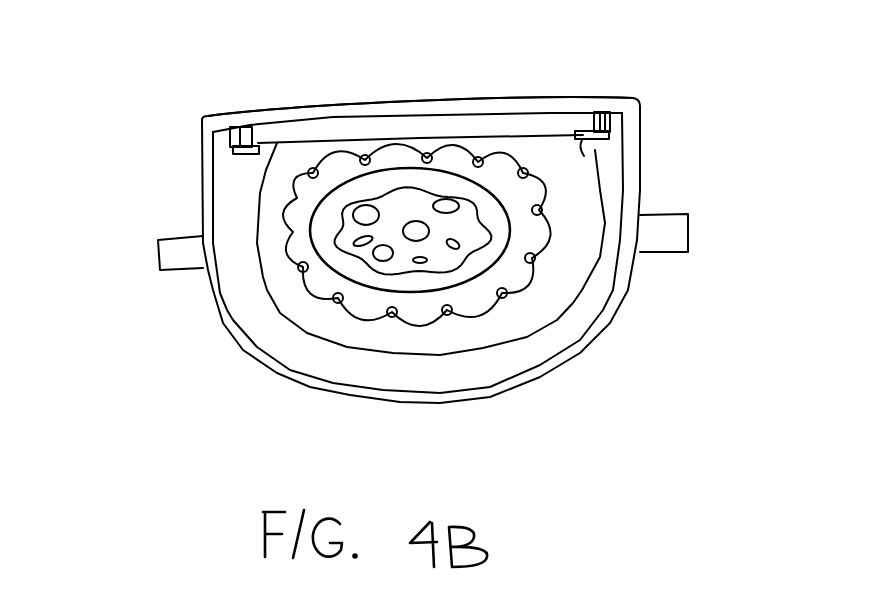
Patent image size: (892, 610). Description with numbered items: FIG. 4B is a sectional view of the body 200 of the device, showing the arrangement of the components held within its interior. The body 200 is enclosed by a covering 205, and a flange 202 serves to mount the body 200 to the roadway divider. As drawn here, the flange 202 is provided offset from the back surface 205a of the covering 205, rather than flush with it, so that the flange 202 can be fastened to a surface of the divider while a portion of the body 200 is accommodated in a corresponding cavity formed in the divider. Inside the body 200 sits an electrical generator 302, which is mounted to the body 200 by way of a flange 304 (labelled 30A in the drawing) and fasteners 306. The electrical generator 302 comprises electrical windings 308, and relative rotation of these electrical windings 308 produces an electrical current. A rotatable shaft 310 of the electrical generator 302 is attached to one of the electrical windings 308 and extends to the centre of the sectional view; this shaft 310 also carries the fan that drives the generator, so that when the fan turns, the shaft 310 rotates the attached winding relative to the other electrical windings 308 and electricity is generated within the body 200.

The body 200 is at (562, 380).
The flange 202 is at (170, 237).
The covering 205 is at (470, 393).
The back surface 205a is at (258, 116).
The flange 304 is at (323, 125).
The lid inner plate 30A is at (417, 128).
The fasteners 306 is at (235, 162).
The electrical generator 302 is at (582, 300).
The electrical windings 308 is at (533, 178).
The rotatable shaft 310 is at (415, 223).